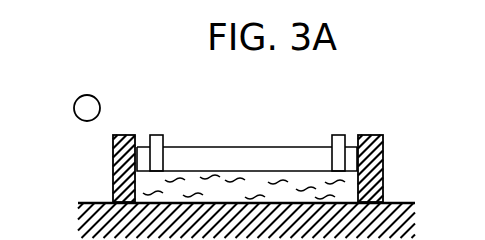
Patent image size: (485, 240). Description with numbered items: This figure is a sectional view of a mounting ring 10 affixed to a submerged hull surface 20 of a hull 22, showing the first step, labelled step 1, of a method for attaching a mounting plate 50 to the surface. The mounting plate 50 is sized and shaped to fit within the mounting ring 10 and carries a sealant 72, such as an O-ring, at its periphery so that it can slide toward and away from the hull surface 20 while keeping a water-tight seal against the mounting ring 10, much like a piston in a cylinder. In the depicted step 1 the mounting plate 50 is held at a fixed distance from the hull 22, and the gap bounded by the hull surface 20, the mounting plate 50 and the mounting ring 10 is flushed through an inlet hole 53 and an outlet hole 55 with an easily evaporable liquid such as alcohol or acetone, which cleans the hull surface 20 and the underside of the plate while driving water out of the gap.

The step 1 is at (87, 108).
The mounting ring 10 is at (385, 171).
The hull surface 20 is at (391, 203).
The hull 22 is at (393, 227).
The mounting plate 50 is at (253, 158).
The inlet hole 53 is at (164, 136).
The outlet hole 55 is at (331, 136).
The sealant 72 is at (112, 158).